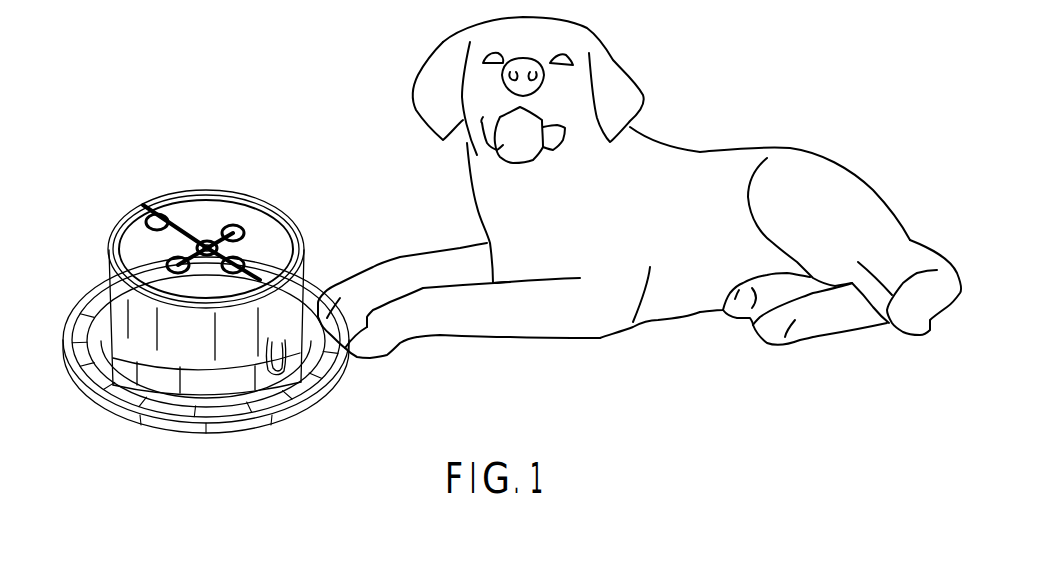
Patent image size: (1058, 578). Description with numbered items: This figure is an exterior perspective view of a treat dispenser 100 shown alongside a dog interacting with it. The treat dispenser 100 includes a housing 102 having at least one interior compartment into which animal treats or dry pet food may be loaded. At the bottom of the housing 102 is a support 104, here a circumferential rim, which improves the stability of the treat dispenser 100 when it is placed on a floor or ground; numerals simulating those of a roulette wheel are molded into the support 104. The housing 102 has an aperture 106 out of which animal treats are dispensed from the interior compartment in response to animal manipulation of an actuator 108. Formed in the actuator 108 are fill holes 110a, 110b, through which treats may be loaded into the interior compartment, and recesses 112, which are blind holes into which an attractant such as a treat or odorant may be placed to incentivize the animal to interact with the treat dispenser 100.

The treat dispenser 100 is at (196, 288).
The housing 102 is at (155, 377).
The support 104 is at (207, 425).
The aperture 106 is at (273, 373).
The actuator 108 is at (120, 212).
The fill hole 110a is at (158, 217).
The fill hole 110b is at (247, 257).
The recess 112 is at (232, 223).